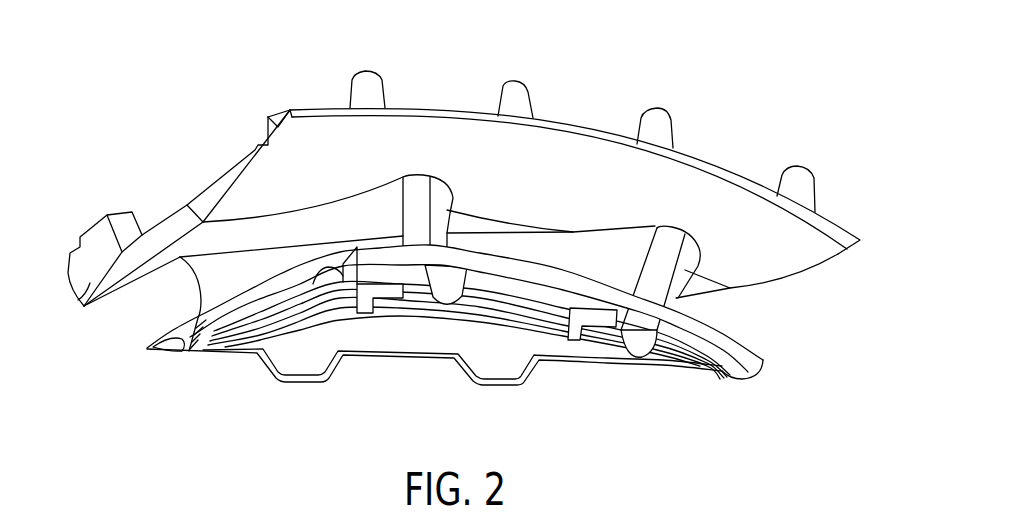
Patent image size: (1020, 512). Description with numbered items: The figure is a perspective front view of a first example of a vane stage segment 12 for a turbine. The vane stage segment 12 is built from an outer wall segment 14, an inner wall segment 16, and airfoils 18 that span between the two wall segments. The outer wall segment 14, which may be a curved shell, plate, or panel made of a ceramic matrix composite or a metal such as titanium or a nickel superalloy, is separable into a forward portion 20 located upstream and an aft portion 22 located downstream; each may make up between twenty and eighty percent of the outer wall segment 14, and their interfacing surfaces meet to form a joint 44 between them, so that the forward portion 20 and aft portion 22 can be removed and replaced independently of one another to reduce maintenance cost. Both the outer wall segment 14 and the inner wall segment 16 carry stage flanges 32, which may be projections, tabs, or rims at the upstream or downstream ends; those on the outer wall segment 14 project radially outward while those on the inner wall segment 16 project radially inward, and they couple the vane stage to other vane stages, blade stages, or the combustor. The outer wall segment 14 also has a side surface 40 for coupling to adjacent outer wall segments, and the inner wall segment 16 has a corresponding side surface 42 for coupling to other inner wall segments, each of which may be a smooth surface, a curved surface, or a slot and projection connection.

The vane stage segment 12 is at (128, 115).
The outer wall segment 14 is at (845, 184).
The inner wall segment 16 is at (665, 360).
The airfoils 18 is at (420, 190).
The forward portion 20 is at (229, 172).
The aft portion 22 is at (155, 227).
The stage flanges 32 is at (363, 70).
The side surface 40 is at (90, 287).
The side surface 42 is at (216, 314).
The joint 44 is at (267, 212).